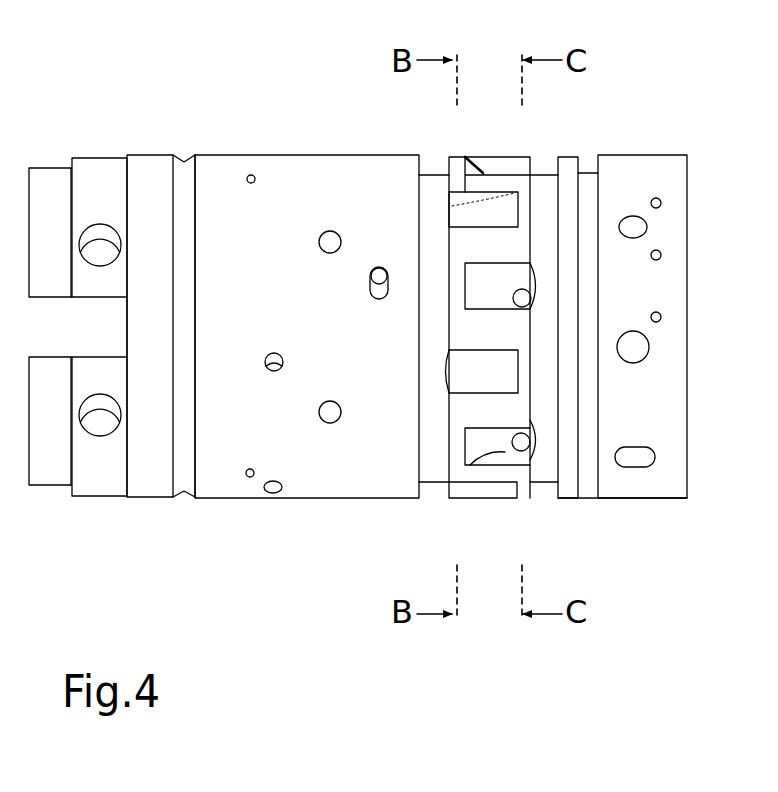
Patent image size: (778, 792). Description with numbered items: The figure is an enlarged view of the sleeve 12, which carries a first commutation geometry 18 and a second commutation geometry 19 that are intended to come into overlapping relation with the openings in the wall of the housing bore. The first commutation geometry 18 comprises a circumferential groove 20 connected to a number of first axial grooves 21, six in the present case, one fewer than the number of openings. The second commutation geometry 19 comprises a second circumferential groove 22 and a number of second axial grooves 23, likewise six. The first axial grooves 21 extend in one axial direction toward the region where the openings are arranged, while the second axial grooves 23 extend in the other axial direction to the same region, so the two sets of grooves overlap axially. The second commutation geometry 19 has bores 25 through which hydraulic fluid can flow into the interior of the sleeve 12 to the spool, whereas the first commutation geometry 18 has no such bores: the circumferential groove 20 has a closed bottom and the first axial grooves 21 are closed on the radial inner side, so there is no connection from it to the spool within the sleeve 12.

The sleeve 12 is at (118, 122).
The first commutation geometry 18 is at (468, 205).
The second commutation geometry 19 is at (543, 437).
The circumferential groove 20 is at (433, 197).
The first axial grooves 21 is at (503, 222).
The second circumferential groove 22 is at (539, 193).
The second axial grooves 23 is at (492, 458).
The bores 25 is at (533, 290).